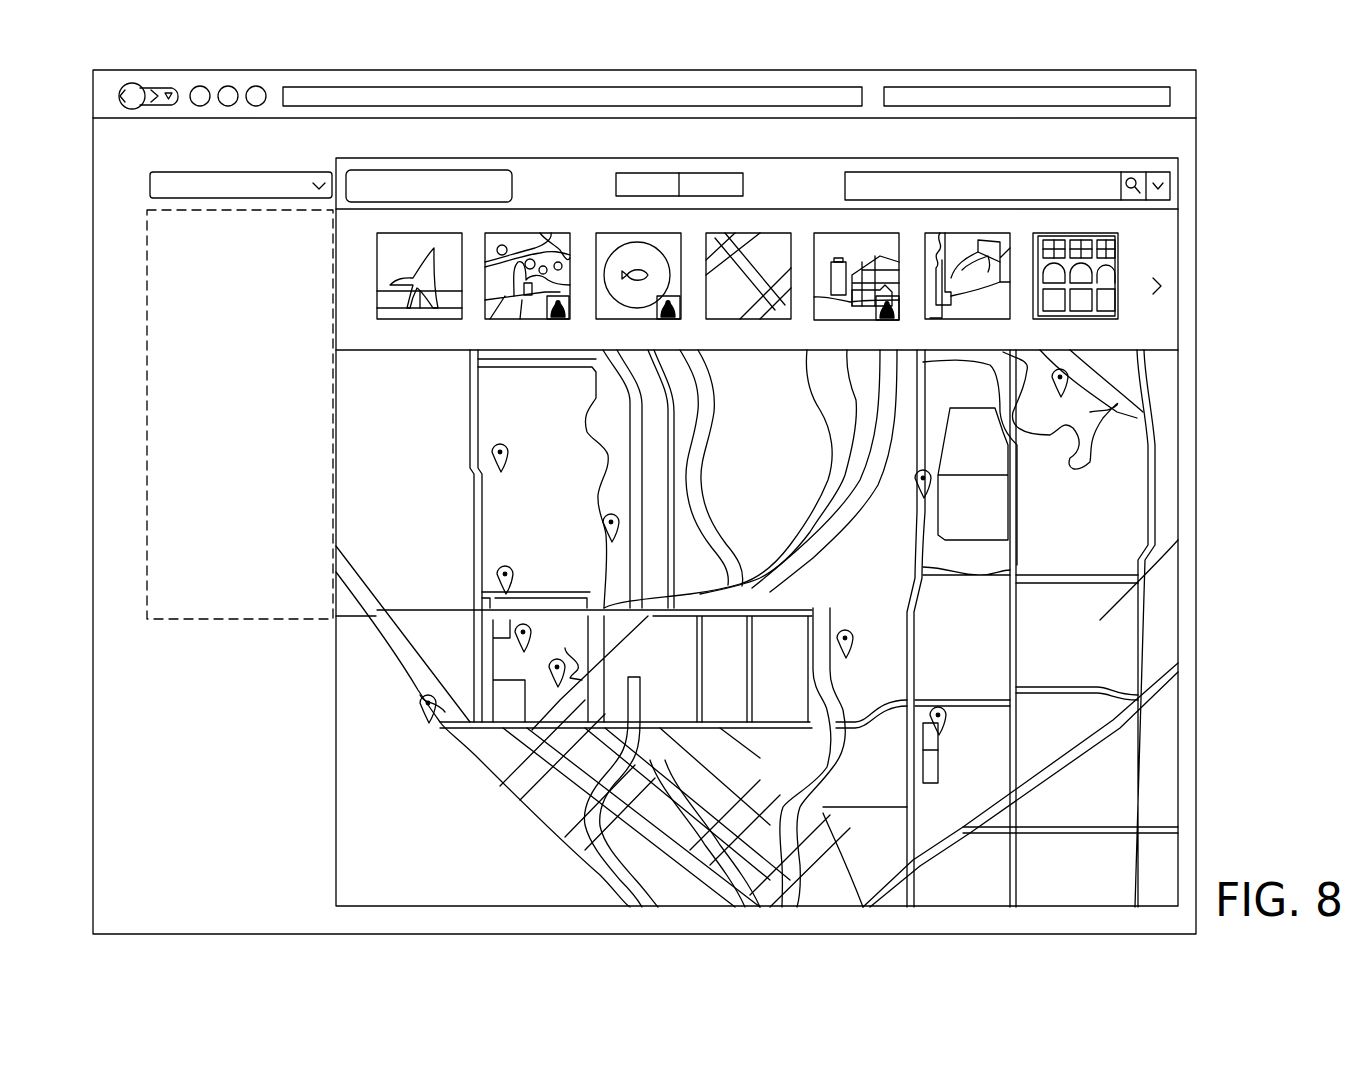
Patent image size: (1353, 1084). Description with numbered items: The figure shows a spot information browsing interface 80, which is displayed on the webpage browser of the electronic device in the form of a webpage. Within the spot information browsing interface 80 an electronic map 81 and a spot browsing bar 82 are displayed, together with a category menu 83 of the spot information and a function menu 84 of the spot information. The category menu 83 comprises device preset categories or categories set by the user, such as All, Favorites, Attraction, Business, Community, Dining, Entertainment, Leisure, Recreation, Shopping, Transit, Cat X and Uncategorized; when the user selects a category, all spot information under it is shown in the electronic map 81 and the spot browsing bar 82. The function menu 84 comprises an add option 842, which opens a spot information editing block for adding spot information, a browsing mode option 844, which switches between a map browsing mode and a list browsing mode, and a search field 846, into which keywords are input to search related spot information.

The spot information browsing interface 80 is at (1197, 102).
The electronic map 81 is at (1164, 529).
The spot browsing bar 82 is at (1160, 250).
The category menu 83 is at (147, 348).
The function menu 84 is at (797, 512).
The add option 842 is at (428, 166).
The browsing mode option 844 is at (651, 173).
The search field 846 is at (988, 170).